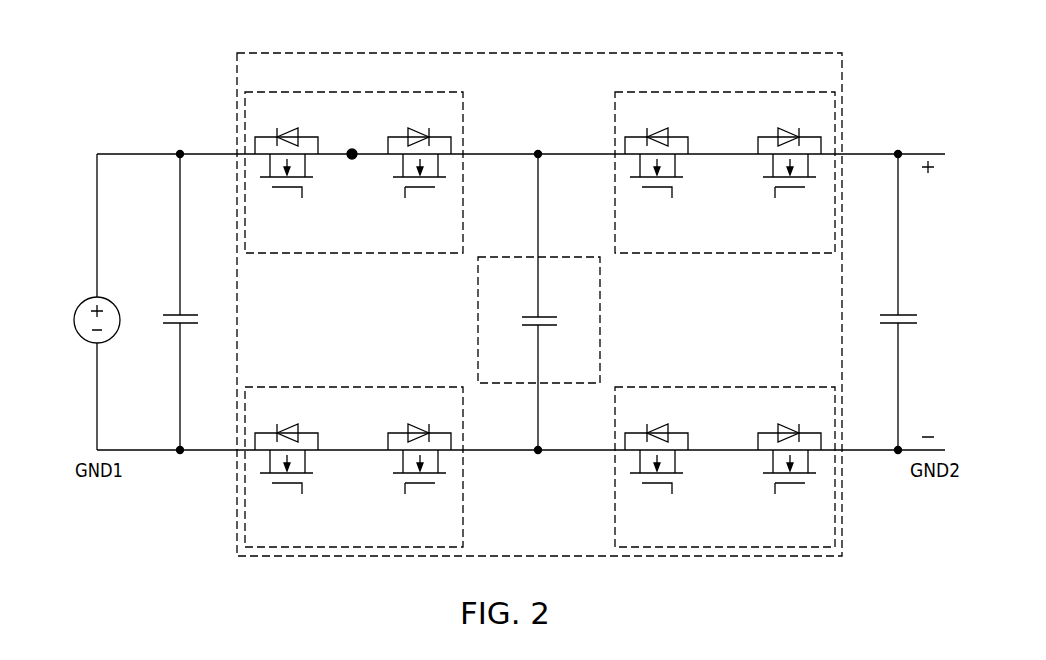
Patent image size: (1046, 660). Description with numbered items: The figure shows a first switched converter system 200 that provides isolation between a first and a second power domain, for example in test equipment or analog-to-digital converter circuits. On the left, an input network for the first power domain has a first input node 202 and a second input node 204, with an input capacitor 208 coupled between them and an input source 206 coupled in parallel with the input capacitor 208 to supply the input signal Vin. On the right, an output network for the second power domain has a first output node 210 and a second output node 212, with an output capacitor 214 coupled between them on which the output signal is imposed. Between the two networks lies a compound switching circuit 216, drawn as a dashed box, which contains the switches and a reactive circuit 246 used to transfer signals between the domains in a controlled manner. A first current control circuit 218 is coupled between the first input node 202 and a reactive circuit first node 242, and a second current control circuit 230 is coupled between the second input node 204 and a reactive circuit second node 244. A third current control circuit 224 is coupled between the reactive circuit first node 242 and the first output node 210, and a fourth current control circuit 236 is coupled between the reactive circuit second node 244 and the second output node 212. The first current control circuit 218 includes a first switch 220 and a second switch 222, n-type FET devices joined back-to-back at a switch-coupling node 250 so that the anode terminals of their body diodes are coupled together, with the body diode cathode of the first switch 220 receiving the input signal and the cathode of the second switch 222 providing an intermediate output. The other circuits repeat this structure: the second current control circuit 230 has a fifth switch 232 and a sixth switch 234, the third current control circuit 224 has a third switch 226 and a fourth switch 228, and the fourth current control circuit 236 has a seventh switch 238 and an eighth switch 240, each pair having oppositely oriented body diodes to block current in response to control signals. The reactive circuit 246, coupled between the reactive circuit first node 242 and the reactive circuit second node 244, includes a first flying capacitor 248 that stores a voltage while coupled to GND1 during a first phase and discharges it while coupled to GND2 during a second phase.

The first switched converter system 200 is at (125, 36).
The first input node 202 is at (181, 150).
The second input node 204 is at (179, 455).
The input source 206 is at (113, 302).
The input capacitor 208 is at (190, 326).
The first output node 210 is at (899, 150).
The second output node 212 is at (896, 455).
The output capacitor 214 is at (903, 326).
The compound switching circuit 216 is at (538, 52).
The first current control circuit 218 is at (353, 91).
The first switch 220 is at (303, 196).
The second switch 222 is at (404, 196).
The third current control circuit 224 is at (725, 91).
The third switch 226 is at (673, 196).
The fourth switch 228 is at (774, 196).
The second current control circuit 230 is at (353, 386).
The fifth switch 232 is at (303, 492).
The sixth switch 234 is at (404, 492).
The fourth current control circuit 236 is at (723, 386).
The seventh switch 238 is at (673, 492).
The eighth switch 240 is at (774, 492).
The reactive circuit first node 242 is at (539, 150).
The reactive circuit second node 244 is at (536, 455).
The reactive circuit 246 is at (601, 321).
The first flying capacitor 248 is at (545, 326).
The switch-coupling node 250 is at (353, 148).